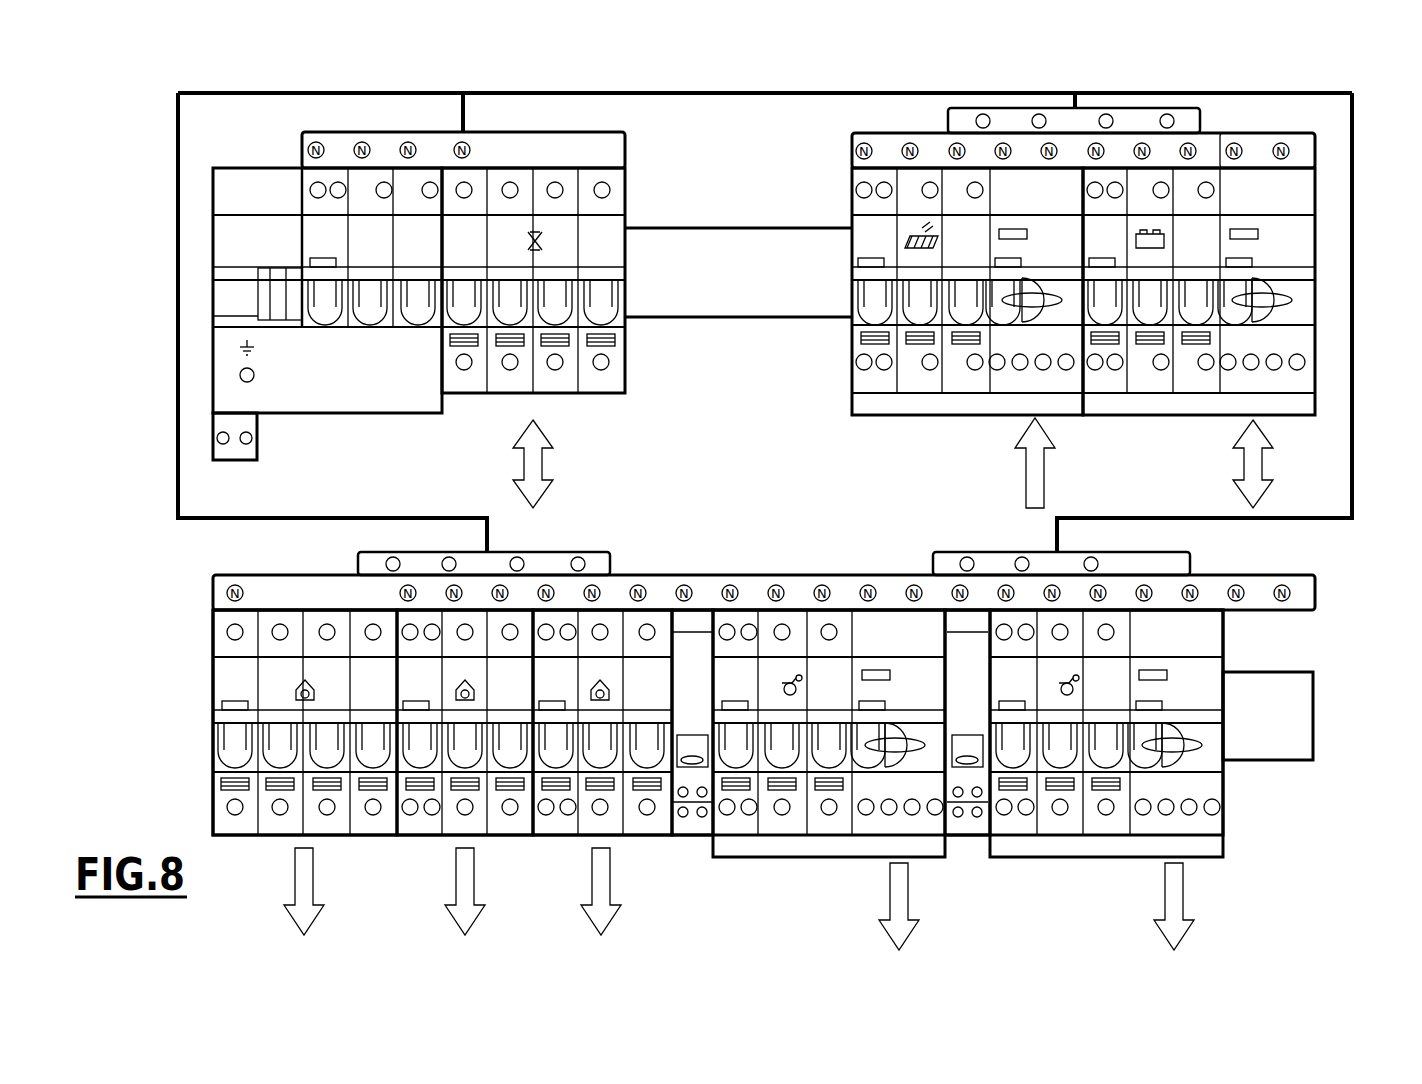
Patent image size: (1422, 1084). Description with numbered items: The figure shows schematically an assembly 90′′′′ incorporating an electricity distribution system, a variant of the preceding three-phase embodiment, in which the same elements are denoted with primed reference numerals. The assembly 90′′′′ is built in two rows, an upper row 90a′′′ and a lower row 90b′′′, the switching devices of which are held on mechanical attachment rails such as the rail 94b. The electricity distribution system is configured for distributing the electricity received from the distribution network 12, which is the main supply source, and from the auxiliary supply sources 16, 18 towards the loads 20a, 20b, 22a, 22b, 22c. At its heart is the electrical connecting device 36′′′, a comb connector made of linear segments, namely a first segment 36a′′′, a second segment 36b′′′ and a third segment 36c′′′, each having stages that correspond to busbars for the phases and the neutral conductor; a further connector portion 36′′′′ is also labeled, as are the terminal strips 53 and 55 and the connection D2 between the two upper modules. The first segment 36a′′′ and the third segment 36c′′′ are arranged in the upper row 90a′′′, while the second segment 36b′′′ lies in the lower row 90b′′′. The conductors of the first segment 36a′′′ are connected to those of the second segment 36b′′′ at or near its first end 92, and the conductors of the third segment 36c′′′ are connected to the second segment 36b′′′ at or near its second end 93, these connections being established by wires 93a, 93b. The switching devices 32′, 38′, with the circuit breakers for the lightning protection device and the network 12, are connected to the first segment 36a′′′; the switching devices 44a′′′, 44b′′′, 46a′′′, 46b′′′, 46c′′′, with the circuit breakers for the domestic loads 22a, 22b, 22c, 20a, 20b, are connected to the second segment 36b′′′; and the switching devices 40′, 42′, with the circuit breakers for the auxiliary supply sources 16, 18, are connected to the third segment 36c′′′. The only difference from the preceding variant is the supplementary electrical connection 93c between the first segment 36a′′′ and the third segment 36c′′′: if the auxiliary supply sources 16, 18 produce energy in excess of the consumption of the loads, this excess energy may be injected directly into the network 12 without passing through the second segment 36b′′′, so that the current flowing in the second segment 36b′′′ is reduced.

The assembly 90′′′′ is at (730, 303).
The upper row 90a′′′ is at (680, 320).
The lower row 90b′′′ is at (749, 743).
The second end 93 is at (1320, 592).
The wire 93a is at (176, 378).
The wire 93b is at (1356, 310).
The supplementary electrical connection 93c is at (735, 91).
The mechanical attachment rail 94b is at (1320, 714).
The first end 92 is at (208, 574).
The upper left terminal strip 53 is at (292, 148).
The upper right terminal strip 55 is at (842, 150).
The first segment 36a′′′ is at (483, 140).
The connector 36′′′′ is at (578, 140).
The electrical connecting device 36′′′ is at (915, 140).
The second segment 36b′′′ is at (780, 575).
The third segment 36c′′′ is at (1258, 140).
The switching device 32′ is at (327, 414).
The switching device 38′ is at (474, 400).
The distribution network 12 is at (548, 466).
The connecting conductor D2 is at (742, 322).
The switching device 40′ is at (918, 420).
The switching device 42′ is at (1138, 420).
The auxiliary supply source 16 is at (1025, 478).
The auxiliary supply source 18 is at (1244, 464).
The switching device 46a′′′ is at (246, 848).
The switching device 46b′′′ is at (418, 848).
The switching device 46c′′′ is at (563, 848).
The switching device 44a′′′ is at (796, 862).
The switching device 44b′′′ is at (1075, 862).
The load 22a is at (318, 876).
The load 22b is at (479, 876).
The load 22c is at (615, 876).
The load 20a is at (913, 886).
The load 20b is at (1188, 886).